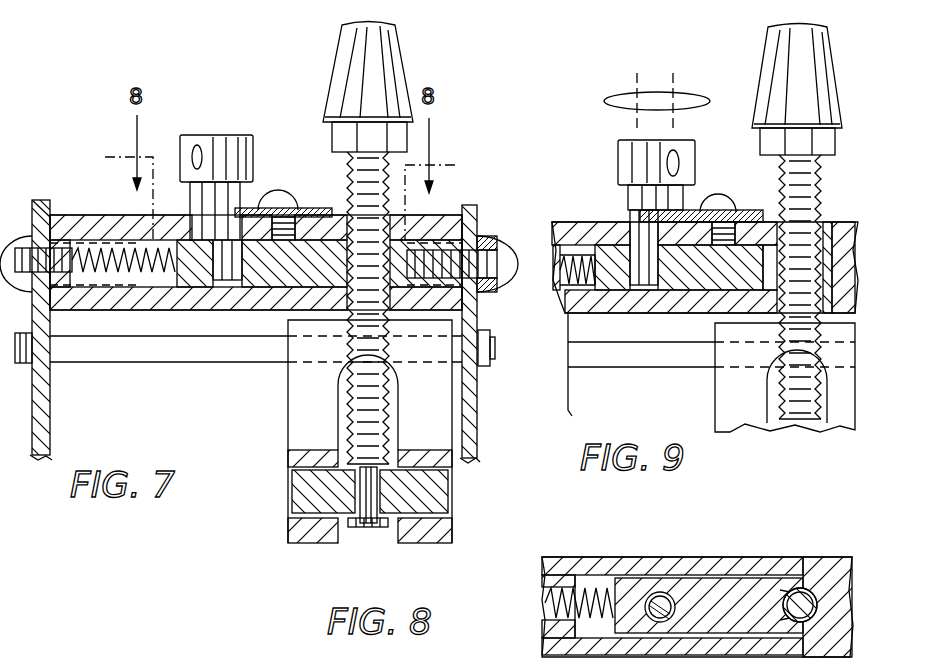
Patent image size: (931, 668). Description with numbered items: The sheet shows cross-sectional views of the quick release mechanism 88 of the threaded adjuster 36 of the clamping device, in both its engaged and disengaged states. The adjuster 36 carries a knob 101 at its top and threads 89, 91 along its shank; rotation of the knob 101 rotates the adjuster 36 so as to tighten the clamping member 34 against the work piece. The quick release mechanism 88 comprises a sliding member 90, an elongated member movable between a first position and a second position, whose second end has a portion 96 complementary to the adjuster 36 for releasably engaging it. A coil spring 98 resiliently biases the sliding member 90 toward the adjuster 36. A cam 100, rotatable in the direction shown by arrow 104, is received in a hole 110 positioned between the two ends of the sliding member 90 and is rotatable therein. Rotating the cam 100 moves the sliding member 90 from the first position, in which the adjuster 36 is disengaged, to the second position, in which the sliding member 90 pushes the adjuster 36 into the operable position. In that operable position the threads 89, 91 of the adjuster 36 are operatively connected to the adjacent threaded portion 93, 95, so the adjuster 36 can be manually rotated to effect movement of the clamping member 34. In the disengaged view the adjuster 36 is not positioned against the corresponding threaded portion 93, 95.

In FIG. 7, the clamping member 34 is at (288, 445).
In FIG. 9, the clamping member 34 is at (833, 432).
In FIG. 7, the threaded adjuster 36 is at (327, 80).
In FIG. 9, the threaded adjuster 36 is at (840, 80).
In FIG. 8, the threaded adjuster 36 is at (825, 585).
In FIG. 7, the quick release mechanism 88 is at (272, 162).
In FIG. 9, the quick release mechanism 88 is at (737, 193).
In FIG. 7, the thread 89 is at (347, 197).
In FIG. 7, the sliding member 90 is at (173, 275).
In FIG. 9, the sliding member 90 is at (592, 300).
In FIG. 8, the sliding member 90 is at (605, 621).
In FIG. 7, the thread 91 is at (363, 283).
In FIG. 7, the threaded portion 93 is at (480, 208).
In FIG. 7, the threaded portion 95 is at (345, 345).
In FIG. 8, the complementary portion 96 is at (797, 590).
In FIG. 7, the spring 98 is at (92, 273).
In FIG. 9, the spring 98 is at (560, 287).
In FIG. 8, the spring 98 is at (560, 603).
In FIG. 7, the cam 100 is at (175, 150).
In FIG. 9, the cam 100 is at (612, 165).
In FIG. 8, the cam 100 is at (657, 592).
In FIG. 7, the knob 101 is at (403, 43).
In FIG. 9, the arrow 104 is at (692, 97).
In FIG. 9, the hole 110 is at (640, 292).